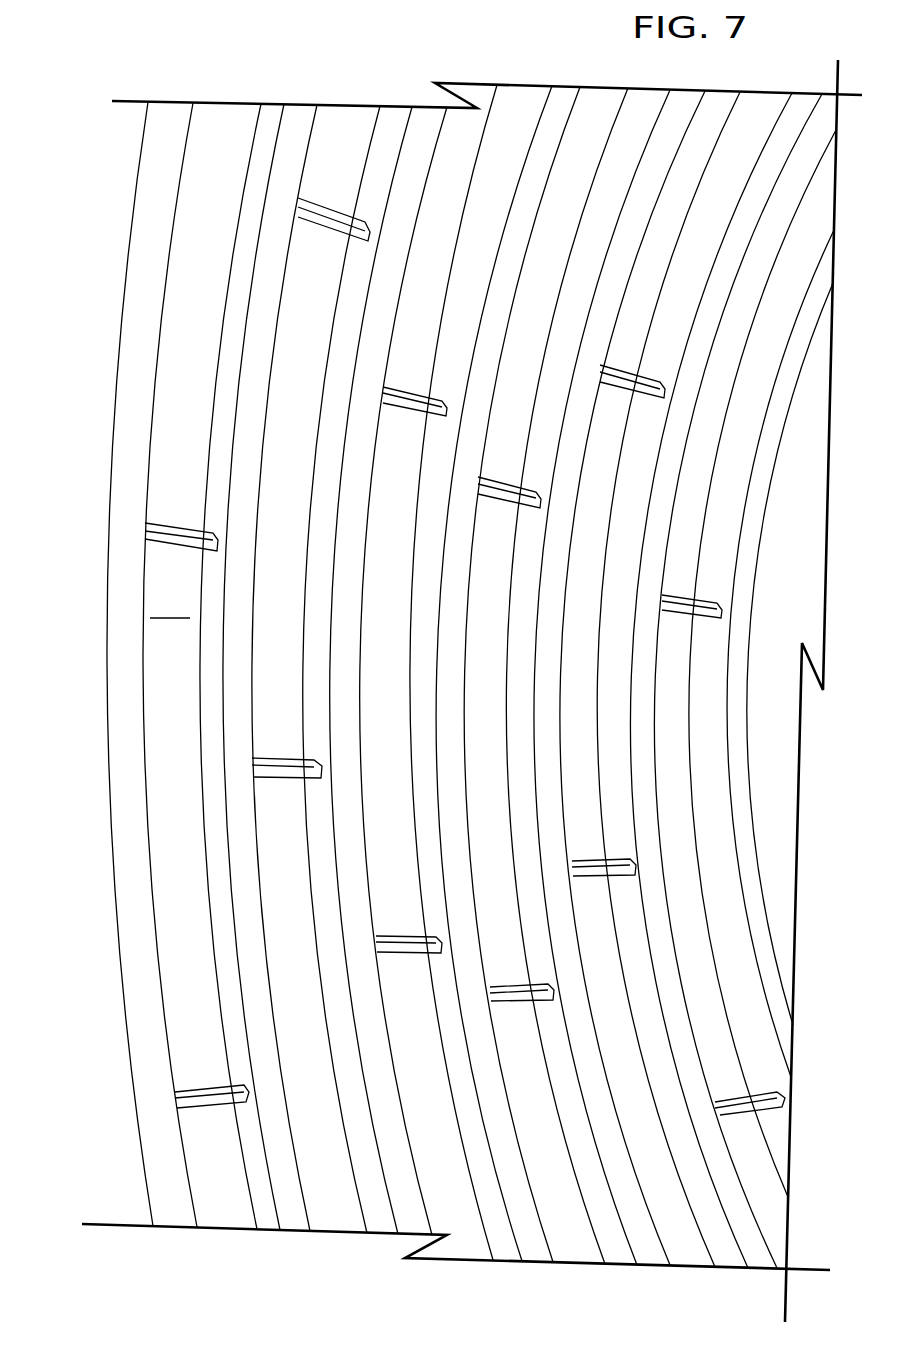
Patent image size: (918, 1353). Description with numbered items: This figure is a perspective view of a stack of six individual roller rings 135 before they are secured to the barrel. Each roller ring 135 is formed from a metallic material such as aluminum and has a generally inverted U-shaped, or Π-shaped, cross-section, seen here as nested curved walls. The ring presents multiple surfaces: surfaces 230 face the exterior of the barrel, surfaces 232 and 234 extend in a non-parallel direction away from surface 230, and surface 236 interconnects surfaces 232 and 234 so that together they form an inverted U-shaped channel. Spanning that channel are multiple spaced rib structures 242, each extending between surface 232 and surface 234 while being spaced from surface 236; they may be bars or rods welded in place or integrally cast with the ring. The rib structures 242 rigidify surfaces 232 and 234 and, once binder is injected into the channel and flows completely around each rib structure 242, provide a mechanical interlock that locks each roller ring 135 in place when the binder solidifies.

The roller ring 135 is at (122, 492).
The surface 230 is at (125, 612).
The surface 232 is at (142, 680).
The surface 234 is at (212, 765).
The surface 236 is at (170, 605).
The rib structure 242 is at (182, 523).